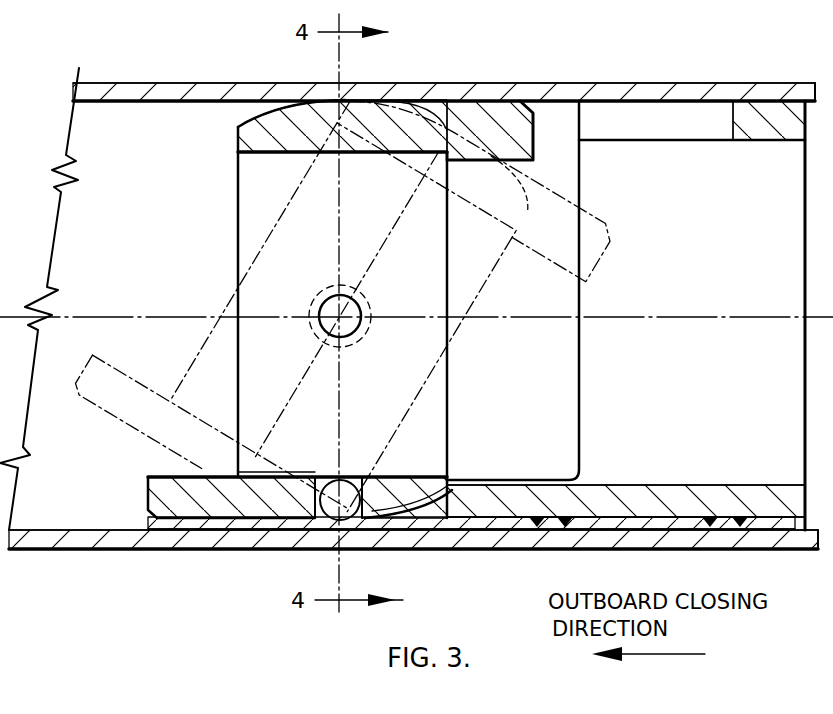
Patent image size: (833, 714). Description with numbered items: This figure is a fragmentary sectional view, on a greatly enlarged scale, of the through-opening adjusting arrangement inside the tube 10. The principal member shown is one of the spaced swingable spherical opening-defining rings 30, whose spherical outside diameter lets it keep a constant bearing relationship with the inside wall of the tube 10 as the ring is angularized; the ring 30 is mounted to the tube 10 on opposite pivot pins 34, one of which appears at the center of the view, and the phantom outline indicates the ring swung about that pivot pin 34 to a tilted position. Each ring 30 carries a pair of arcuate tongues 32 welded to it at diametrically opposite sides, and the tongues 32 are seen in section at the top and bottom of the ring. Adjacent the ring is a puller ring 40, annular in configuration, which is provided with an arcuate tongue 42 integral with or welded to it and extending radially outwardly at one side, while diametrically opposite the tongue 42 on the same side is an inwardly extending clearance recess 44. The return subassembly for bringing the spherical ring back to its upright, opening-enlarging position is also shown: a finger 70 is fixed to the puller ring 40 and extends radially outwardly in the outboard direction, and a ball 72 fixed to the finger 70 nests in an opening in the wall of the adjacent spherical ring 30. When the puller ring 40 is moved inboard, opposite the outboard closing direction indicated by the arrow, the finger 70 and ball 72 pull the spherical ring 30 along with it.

The tube 10 is at (650, 92).
The spherical opening-defining ring 30 is at (263, 122).
The arcuate tongue 32 is at (498, 120).
The pivot pin 34 is at (330, 308).
The puller ring 40 is at (742, 112).
The arcuate tongue 42 is at (512, 497).
The clearance recess 44 is at (692, 120).
The finger 70 is at (643, 510).
The ball 72 is at (348, 477).